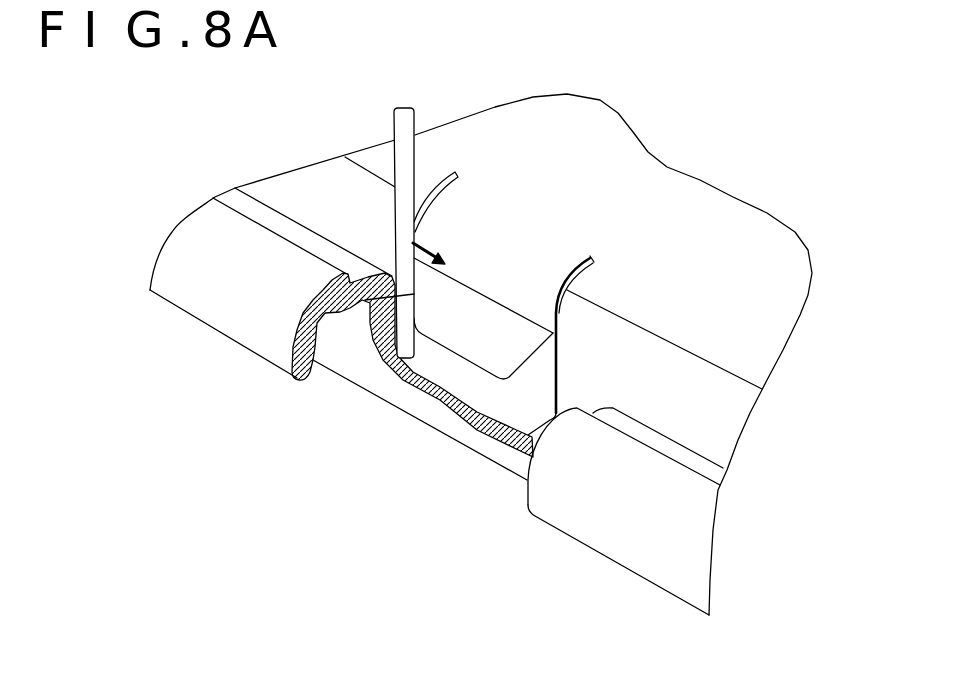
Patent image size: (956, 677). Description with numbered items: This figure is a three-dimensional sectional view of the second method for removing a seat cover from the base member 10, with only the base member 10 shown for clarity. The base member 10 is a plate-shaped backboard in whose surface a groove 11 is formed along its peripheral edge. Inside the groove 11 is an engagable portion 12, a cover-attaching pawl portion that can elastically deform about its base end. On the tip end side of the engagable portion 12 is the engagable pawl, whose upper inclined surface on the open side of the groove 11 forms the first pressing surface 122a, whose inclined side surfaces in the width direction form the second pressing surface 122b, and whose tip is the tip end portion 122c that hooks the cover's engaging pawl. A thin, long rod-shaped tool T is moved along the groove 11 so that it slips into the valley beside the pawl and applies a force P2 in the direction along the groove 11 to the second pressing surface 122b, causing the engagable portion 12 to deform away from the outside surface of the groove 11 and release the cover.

The base member 10 is at (573, 547).
The groove 11 is at (690, 423).
The engagable portion 12 is at (524, 335).
The first pressing surface 122a is at (486, 313).
The second pressing surface 122b is at (524, 339).
The tip end portion 122c is at (474, 364).
The rod-shaped tool T is at (407, 158).
The force P2 is at (432, 243).